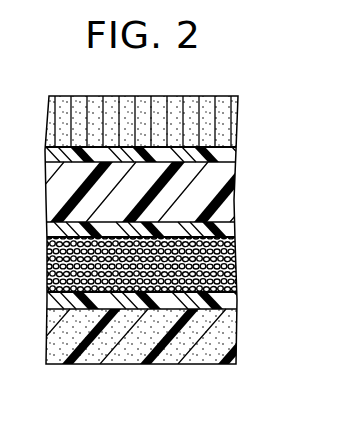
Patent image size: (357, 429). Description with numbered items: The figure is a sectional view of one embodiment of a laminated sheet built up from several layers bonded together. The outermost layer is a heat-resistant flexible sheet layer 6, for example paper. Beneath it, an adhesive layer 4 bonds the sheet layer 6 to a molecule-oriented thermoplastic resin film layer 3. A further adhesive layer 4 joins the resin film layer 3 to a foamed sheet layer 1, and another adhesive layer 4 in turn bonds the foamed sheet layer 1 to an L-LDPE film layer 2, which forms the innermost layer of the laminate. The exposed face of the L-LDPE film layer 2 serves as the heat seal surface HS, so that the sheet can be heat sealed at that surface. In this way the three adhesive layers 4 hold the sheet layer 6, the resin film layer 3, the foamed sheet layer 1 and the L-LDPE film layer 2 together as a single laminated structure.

The heat-resistant flexible sheet layer 6 is at (237, 128).
The adhesive layer 4 is at (237, 157).
The molecule-oriented thermoplastic resin film layer 3 is at (237, 200).
The foamed sheet layer 1 is at (47, 272).
The L-LDPE film layer 2 is at (237, 345).
The heat seal surface HS is at (149, 369).